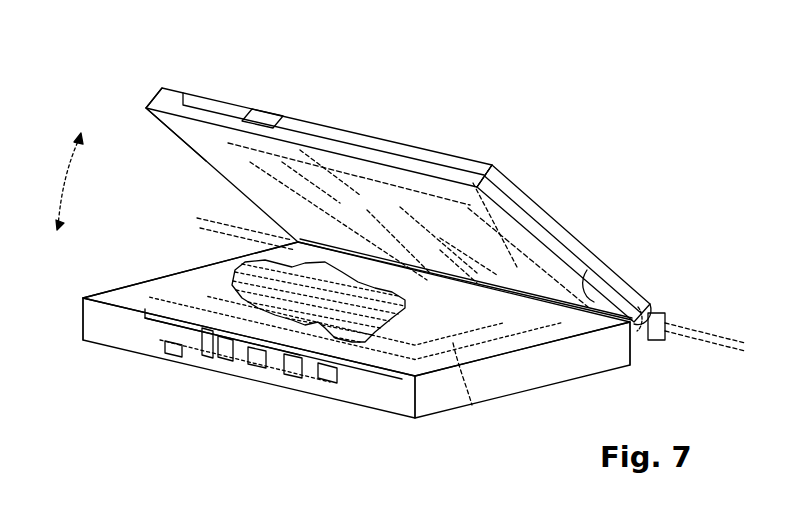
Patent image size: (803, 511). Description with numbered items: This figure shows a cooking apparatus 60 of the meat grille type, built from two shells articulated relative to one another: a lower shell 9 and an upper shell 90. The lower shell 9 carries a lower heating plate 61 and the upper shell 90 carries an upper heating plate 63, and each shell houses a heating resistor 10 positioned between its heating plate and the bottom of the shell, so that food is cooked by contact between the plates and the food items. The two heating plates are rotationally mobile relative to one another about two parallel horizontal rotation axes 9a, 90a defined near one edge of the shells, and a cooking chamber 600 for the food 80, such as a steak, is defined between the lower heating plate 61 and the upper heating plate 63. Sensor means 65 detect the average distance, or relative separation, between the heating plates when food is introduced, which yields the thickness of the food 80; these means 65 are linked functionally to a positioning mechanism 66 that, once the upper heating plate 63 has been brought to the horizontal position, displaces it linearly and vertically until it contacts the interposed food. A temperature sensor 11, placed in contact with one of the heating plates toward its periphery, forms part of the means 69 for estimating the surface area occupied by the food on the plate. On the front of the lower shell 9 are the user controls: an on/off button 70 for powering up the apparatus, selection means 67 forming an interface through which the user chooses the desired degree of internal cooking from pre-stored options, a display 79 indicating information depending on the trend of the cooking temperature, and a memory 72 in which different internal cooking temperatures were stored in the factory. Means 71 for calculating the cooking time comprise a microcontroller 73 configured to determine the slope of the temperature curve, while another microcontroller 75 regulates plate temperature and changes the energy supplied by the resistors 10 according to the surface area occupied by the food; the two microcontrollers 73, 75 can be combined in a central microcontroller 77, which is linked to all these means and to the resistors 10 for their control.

The lower shell 9 is at (391, 425).
The rotation axis 9a is at (208, 238).
The heating resistor 10 is at (472, 394).
The temperature sensor 11 is at (137, 306).
The cooking apparatus 60 is at (273, 98).
The lower heating plate 61 is at (142, 299).
The upper heating plate 63 is at (195, 150).
The sensor means 65 is at (593, 295).
The positioning mechanism 66 is at (657, 311).
The selection means 67 is at (204, 100).
The surface area estimating means 69 is at (91, 322).
The on/off button 70 is at (165, 354).
The cooking time calculating means 71 is at (310, 412).
The memory 72 is at (330, 388).
The microcontroller 73 is at (293, 381).
The microcontroller 75 is at (256, 371).
The central microcontroller 77 is at (212, 362).
The display 79 is at (322, 119).
The food 80 is at (240, 272).
The upper shell 90 is at (444, 163).
The rotation axis 90a is at (216, 218).
The cooking chamber 600 is at (577, 321).